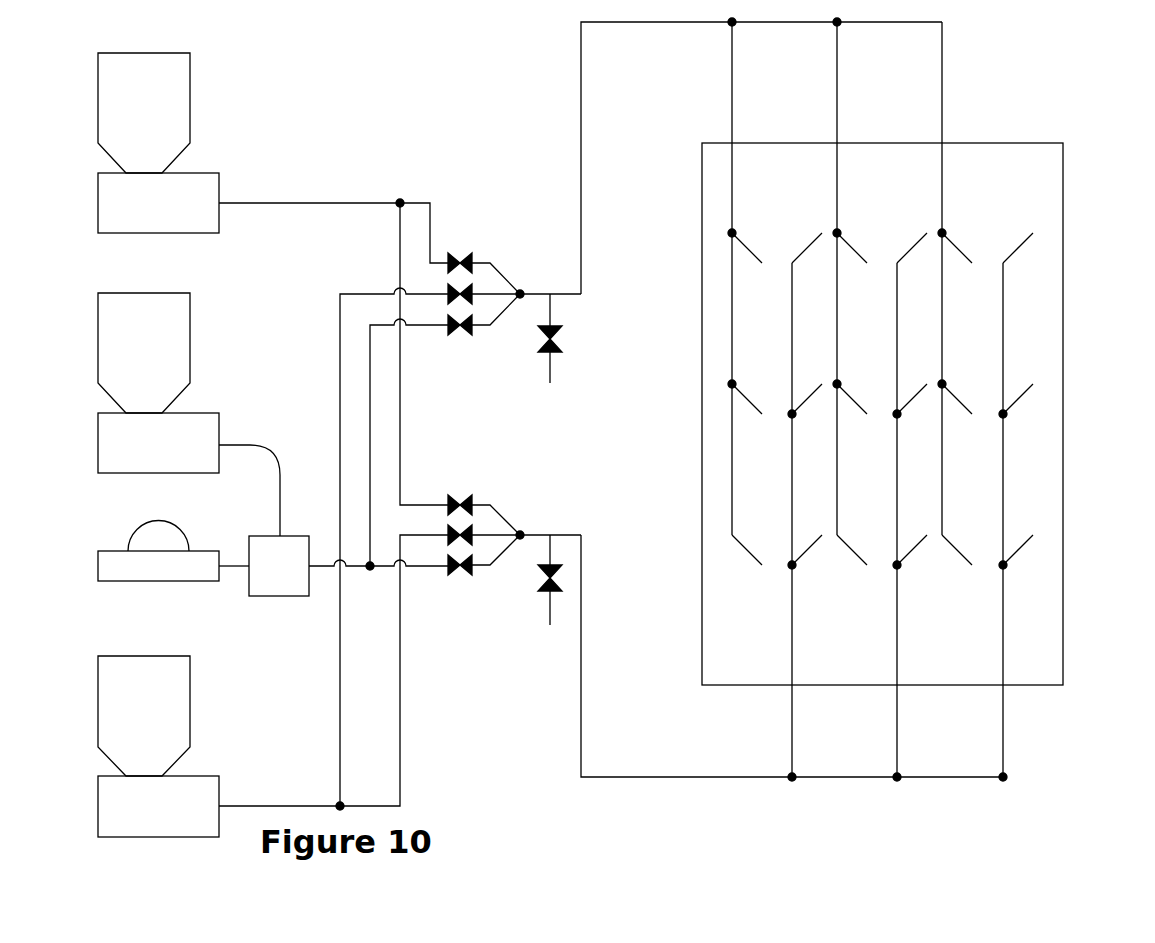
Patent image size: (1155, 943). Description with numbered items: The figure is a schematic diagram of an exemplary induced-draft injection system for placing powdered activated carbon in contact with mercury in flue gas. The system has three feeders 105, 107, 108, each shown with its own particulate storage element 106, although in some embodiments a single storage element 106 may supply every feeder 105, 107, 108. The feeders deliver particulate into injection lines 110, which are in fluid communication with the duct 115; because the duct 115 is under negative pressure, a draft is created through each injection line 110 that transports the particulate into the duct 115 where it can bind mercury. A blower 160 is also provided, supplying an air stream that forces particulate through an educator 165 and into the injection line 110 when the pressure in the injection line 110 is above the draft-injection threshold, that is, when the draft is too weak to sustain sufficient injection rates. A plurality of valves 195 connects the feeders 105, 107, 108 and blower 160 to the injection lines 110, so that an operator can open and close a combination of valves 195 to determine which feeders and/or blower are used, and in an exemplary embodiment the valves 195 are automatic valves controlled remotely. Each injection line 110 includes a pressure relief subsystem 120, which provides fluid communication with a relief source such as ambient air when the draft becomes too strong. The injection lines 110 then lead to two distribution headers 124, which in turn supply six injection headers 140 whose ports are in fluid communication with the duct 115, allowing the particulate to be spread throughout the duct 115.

The first feeder 105 is at (203, 188).
The PAC storage element 106 is at (158, 112).
The feeder 107 is at (190, 430).
The feeder 108 is at (188, 800).
The injection line 110 is at (581, 83).
The duct 115 is at (1033, 322).
The pressure relief subsystem 120 is at (550, 352).
The distribution header 124 is at (882, 22).
The injection header 140 is at (732, 190).
The blower 160 is at (158, 533).
The educator 165 is at (280, 596).
The valves 195 is at (476, 262).